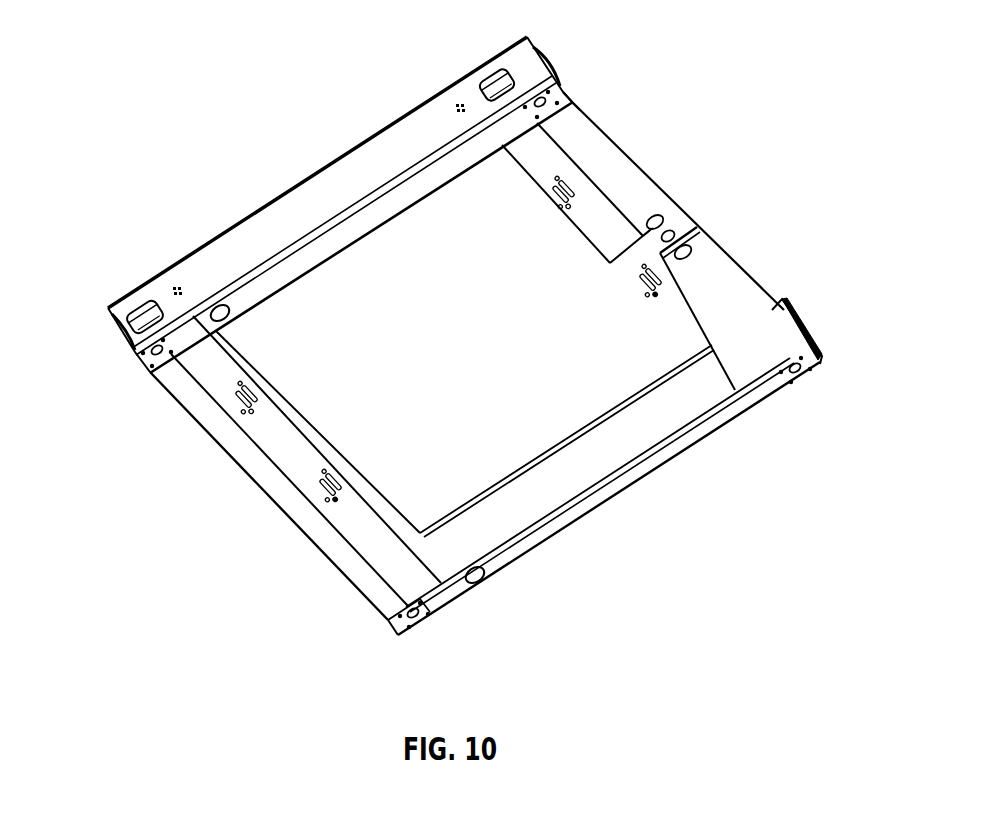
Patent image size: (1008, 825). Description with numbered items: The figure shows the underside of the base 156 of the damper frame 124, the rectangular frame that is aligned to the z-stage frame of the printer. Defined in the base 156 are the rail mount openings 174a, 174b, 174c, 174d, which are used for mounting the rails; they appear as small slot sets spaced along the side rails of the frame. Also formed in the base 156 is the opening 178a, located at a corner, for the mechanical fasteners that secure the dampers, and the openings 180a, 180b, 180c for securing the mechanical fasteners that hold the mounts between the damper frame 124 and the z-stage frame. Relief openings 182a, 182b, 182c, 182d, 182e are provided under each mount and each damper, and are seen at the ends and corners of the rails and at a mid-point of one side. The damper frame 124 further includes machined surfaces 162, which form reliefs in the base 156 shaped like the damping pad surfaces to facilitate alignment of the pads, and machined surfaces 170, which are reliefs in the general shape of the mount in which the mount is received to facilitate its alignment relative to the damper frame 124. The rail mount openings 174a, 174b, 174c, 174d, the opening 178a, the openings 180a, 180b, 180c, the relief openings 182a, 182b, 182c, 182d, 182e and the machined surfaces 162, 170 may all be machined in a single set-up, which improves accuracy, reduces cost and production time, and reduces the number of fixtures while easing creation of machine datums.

The damper frame 124 is at (248, 172).
The damper frame base 156 is at (320, 447).
The machined surface 162 is at (512, 127).
The machined surface 170 is at (633, 250).
The rail mount opening 174a is at (270, 408).
The rail mount opening 174b is at (350, 494).
The rail mount opening 174c is at (548, 188).
The rail mount opening 174d is at (658, 301).
The opening 178a is at (573, 103).
The opening 180a is at (150, 363).
The opening 180b is at (697, 233).
The opening 180c is at (398, 622).
The relief opening 182a is at (122, 343).
The relief opening 182b is at (567, 92).
The relief opening 182c is at (688, 198).
The relief opening 182d is at (815, 366).
The relief opening 182e is at (413, 622).